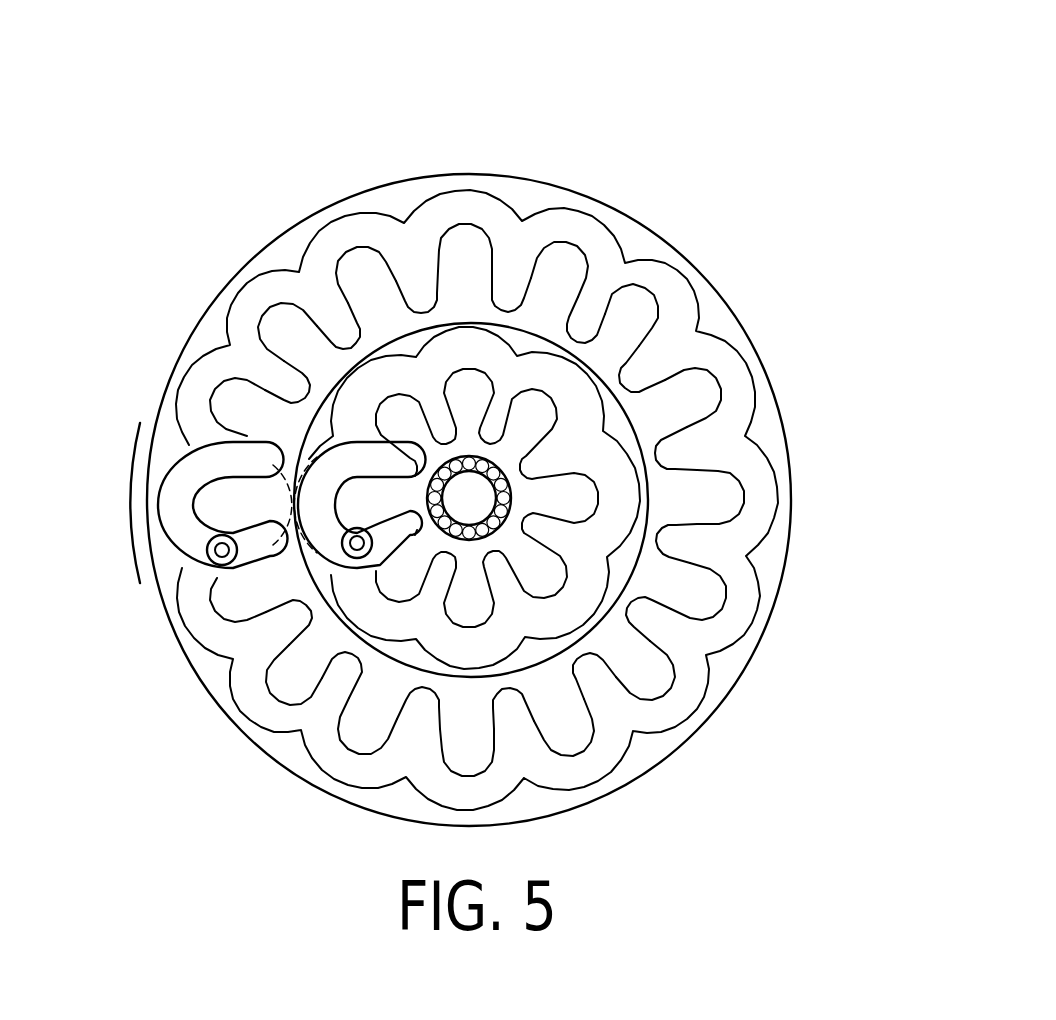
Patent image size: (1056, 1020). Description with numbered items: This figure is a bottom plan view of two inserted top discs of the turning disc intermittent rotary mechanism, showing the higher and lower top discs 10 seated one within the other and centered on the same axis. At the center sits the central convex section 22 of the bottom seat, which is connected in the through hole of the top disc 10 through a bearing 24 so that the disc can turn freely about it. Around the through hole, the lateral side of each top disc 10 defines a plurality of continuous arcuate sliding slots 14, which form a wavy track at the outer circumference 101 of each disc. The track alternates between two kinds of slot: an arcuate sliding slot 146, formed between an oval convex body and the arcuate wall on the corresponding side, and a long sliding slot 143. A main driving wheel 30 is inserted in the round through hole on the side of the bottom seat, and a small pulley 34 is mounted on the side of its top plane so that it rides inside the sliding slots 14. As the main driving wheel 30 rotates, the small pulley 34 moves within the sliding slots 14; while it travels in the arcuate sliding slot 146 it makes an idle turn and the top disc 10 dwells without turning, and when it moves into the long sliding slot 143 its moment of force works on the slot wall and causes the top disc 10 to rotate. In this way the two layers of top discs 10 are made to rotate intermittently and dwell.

The top disc 10 is at (527, 350).
The sliding slots 14 is at (617, 277).
The outer circumference 101 is at (717, 330).
The arcuate sliding slot 146 is at (613, 503).
The long sliding slot 143 is at (680, 538).
The central convex section 22 is at (467, 507).
The bearing 24 is at (440, 472).
The main driving wheel 30 is at (347, 443).
The small pulley 34 is at (220, 548).